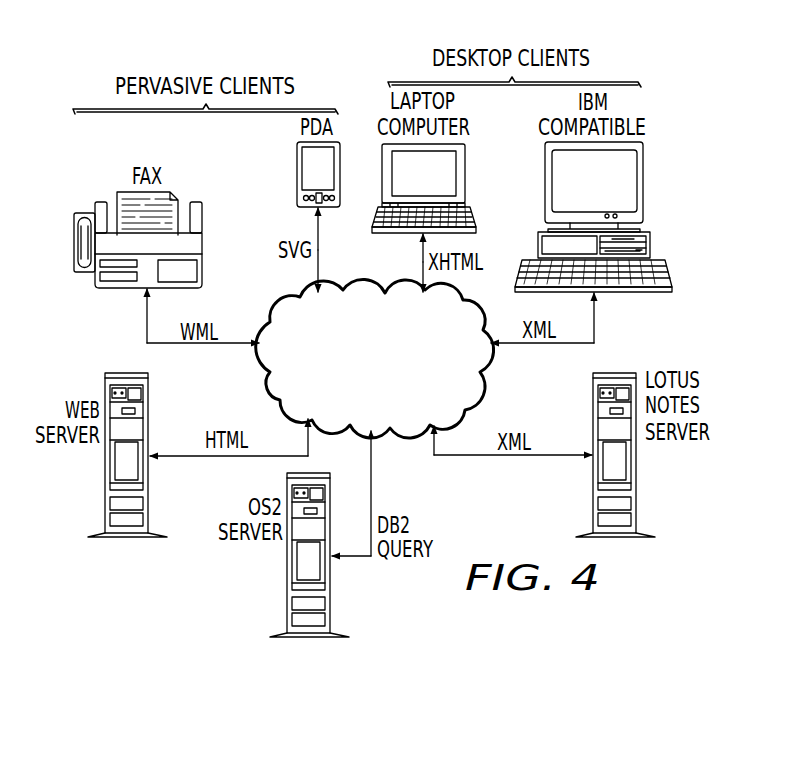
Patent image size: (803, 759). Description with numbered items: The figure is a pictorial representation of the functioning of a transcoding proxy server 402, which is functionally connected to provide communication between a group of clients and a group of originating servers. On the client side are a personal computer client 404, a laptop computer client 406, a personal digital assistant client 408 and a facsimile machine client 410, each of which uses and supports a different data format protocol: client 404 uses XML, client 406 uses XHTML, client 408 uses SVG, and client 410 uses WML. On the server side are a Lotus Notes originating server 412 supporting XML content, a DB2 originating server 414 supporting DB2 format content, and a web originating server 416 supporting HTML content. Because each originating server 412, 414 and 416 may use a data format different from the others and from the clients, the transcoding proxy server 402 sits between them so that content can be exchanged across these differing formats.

The transcoding proxy server 402 is at (268, 386).
The client 404 is at (646, 183).
The client 406 is at (468, 172).
The client 408 is at (297, 175).
The client 410 is at (74, 243).
The originating server 412 is at (639, 468).
The originating server 414 is at (286, 572).
The originating server 416 is at (105, 471).